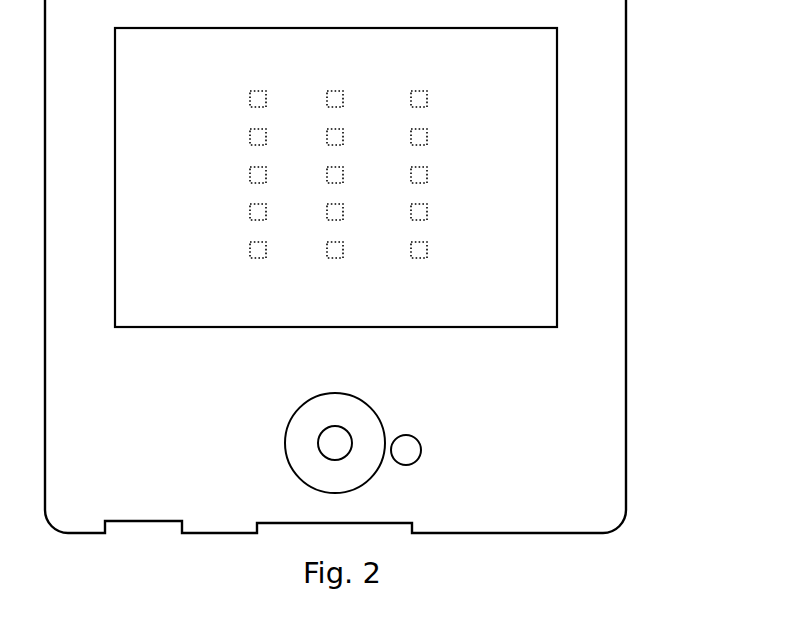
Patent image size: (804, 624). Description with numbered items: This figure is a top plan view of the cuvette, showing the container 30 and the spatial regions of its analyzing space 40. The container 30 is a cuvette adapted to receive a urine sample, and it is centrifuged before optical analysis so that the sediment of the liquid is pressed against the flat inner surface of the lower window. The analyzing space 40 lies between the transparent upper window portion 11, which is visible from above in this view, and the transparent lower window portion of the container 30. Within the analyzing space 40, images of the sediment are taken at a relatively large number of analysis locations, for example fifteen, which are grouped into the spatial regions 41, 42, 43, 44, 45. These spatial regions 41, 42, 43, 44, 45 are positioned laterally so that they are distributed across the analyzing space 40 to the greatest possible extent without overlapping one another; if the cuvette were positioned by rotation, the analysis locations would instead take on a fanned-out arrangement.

The upper window portion 11 is at (516, 184).
The container 30 is at (627, 349).
The analyzing space 40 is at (366, 195).
The spatial region 41 is at (249, 98).
The spatial region 42 is at (249, 135).
The spatial region 43 is at (250, 173).
The spatial region 44 is at (250, 210).
The spatial region 45 is at (250, 249).